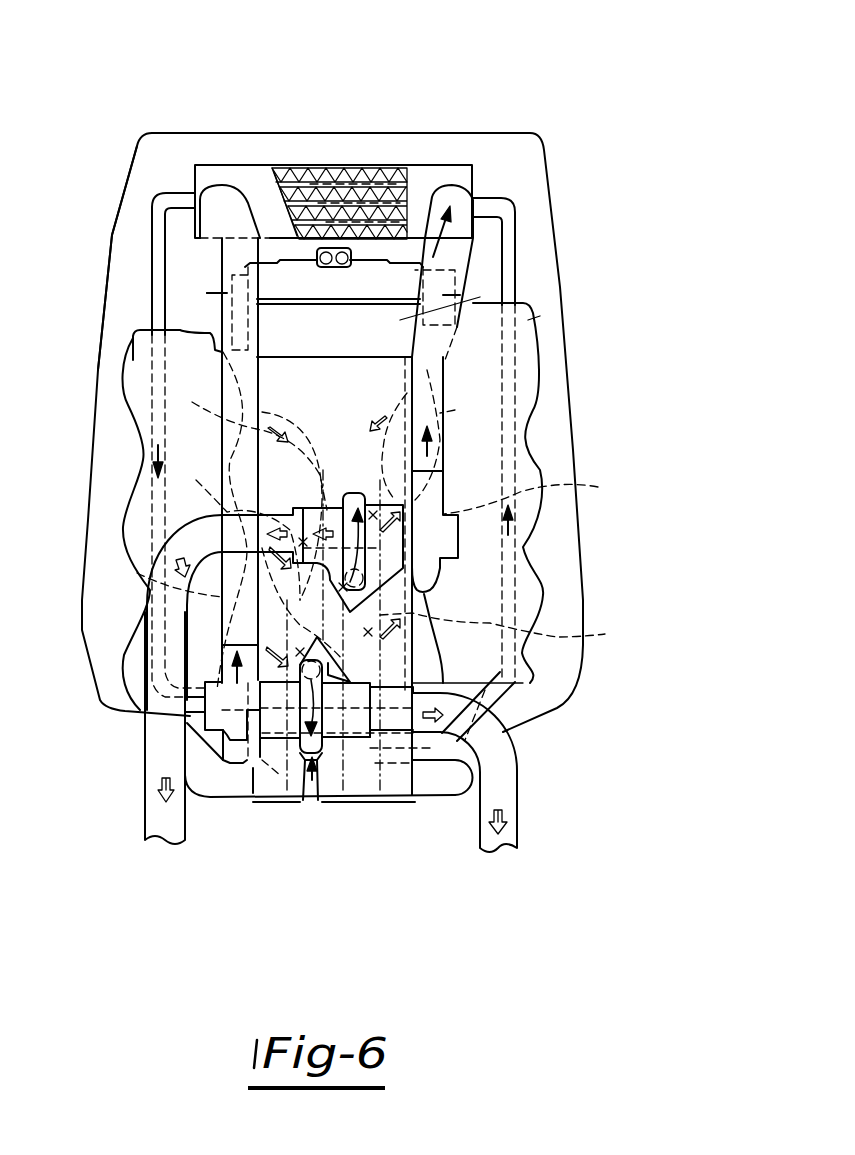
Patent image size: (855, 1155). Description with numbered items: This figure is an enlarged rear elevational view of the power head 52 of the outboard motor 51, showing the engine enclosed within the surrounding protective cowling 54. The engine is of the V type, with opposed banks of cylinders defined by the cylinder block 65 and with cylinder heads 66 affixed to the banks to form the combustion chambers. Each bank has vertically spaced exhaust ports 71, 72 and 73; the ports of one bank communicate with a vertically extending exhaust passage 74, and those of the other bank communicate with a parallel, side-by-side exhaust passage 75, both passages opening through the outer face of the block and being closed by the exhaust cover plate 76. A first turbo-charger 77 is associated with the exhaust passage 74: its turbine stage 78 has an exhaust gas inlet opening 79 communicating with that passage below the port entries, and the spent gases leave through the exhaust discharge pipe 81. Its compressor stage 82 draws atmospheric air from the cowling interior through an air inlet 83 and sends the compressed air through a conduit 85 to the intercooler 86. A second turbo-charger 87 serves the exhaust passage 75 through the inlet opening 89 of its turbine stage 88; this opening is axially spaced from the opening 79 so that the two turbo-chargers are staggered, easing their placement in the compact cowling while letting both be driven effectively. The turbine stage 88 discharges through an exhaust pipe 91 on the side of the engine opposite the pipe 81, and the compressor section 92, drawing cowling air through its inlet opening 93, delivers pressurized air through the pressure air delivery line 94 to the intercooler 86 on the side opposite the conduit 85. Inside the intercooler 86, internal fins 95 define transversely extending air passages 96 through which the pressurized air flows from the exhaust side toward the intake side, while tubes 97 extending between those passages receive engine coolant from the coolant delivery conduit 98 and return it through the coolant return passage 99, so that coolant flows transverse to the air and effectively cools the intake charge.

The outboard motor 51 is at (576, 97).
The power head assembly 52 is at (163, 150).
The protective cowling 54 is at (126, 164).
The cylinder block 65 is at (480, 297).
The cylinder heads 66 is at (528, 320).
The exhaust port 71 is at (331, 521).
The exhaust port 72 is at (409, 506).
The exhaust port 73 is at (373, 506).
The exhaust passage 74 is at (294, 768).
The exhaust passage 75 is at (377, 800).
The exhaust cover plate 76 is at (405, 363).
The first turbo-charger 77 is at (315, 785).
The turbine stage 78 is at (313, 762).
The exhaust gas inlet opening 79 is at (262, 733).
The exhaust discharge pipe 81 is at (517, 813).
The compressor stage 82 is at (253, 768).
The air inlet 83 is at (203, 697).
The conduit 85 is at (225, 320).
The intercooler 86 is at (220, 165).
The second turbo-charger 87 is at (347, 487).
The turbine stage 88 is at (345, 480).
The inlet opening 89 is at (345, 608).
The exhaust pipe 91 is at (140, 797).
The compressor section 92 is at (423, 592).
The inlet opening 93 is at (458, 535).
The pressure air delivery line 94 is at (468, 265).
The internal fins 95 is at (320, 175).
The air passages 96 is at (340, 175).
The tubes 97 is at (285, 168).
The coolant delivery conduit 98 is at (510, 205).
The coolant return passage 99 is at (148, 277).